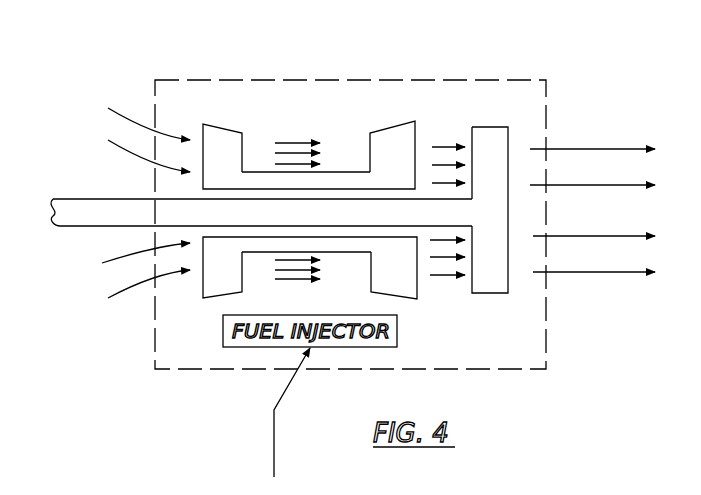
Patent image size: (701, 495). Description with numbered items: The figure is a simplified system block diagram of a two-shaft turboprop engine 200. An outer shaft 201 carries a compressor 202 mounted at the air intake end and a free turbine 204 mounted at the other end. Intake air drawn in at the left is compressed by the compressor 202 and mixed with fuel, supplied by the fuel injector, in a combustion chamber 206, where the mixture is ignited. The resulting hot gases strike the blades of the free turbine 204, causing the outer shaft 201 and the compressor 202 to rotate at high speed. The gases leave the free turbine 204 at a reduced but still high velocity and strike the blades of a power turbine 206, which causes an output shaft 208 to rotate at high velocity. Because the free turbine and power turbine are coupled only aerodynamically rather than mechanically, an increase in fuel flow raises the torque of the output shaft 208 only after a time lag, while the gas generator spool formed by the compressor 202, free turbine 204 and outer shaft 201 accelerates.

The two-shaft turboprop engine 200 is at (276, 80).
The outer shaft 201 is at (335, 170).
The compressor 202 is at (224, 129).
The free turbine 204 is at (391, 127).
The combustion chamber / power turbine 206 is at (308, 138).
The output shaft 208 is at (99, 198).